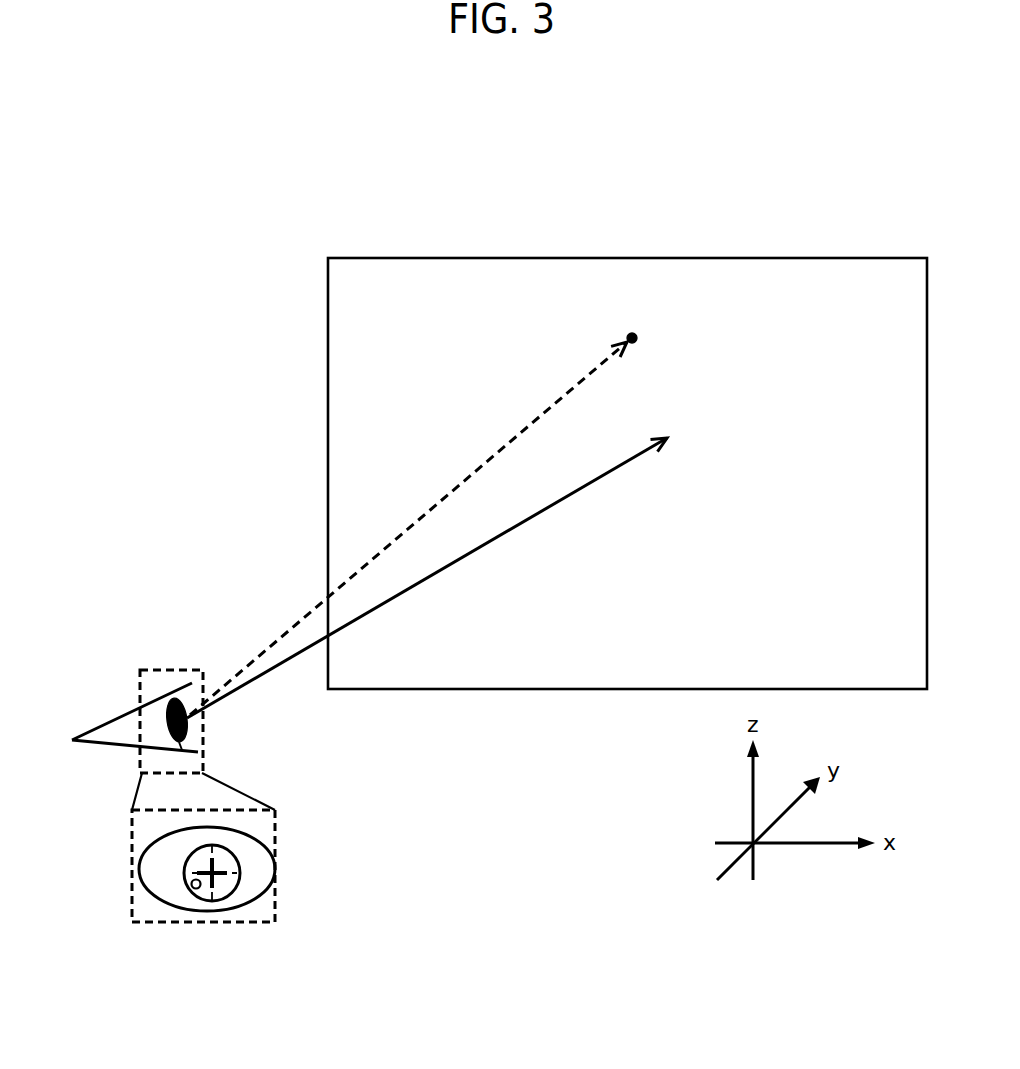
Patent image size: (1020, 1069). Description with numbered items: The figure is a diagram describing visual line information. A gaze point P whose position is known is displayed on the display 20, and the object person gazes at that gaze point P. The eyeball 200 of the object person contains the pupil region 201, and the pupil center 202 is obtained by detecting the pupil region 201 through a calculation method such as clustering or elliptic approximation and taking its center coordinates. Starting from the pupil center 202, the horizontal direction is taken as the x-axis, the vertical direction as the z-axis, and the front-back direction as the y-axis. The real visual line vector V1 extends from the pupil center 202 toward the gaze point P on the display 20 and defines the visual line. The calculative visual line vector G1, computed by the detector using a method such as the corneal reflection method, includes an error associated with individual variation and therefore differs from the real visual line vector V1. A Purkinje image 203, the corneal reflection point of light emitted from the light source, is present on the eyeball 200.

The display 20 is at (327, 508).
The eyeball 200 is at (167, 697).
The pupil region 201 is at (205, 732).
The pupil center 202 is at (225, 875).
The Purkinje image 203 is at (197, 888).
The real visual line vector V1 is at (515, 437).
The calculative visual line vector G1 is at (615, 470).
The gaze point P is at (638, 335).